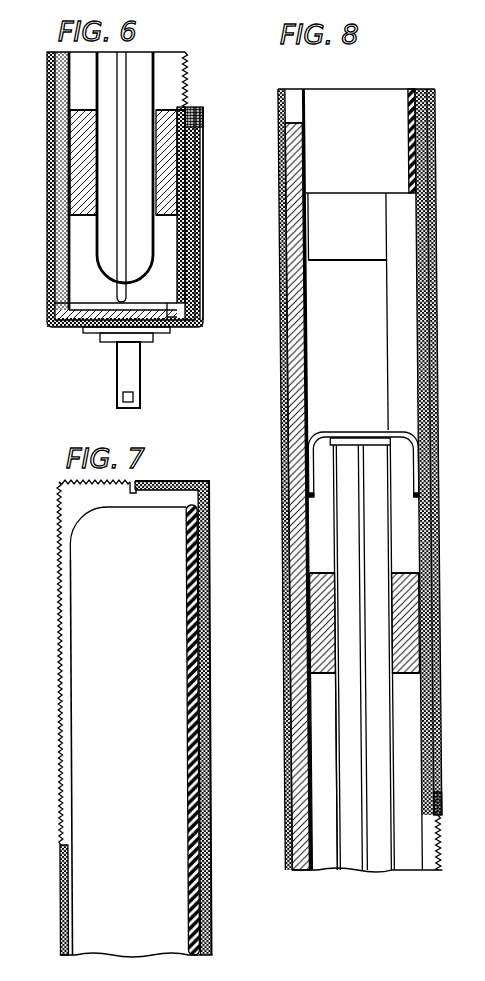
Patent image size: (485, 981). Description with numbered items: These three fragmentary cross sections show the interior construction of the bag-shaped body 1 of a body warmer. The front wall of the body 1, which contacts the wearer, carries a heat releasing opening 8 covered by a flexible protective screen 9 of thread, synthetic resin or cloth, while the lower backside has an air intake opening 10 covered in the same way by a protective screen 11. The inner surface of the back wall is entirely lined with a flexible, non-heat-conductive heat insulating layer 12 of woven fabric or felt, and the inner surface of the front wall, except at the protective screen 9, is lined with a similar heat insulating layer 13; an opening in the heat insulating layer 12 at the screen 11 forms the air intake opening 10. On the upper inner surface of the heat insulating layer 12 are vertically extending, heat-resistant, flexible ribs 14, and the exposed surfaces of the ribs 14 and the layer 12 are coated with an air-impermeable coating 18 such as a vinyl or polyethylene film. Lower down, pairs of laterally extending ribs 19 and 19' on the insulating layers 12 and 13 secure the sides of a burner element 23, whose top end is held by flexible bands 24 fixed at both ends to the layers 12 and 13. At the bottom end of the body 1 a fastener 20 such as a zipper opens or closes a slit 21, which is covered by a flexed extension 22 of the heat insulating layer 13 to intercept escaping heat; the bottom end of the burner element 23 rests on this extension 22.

In FIG. 6, the bag-shaped body 1 is at (47, 101).
In FIG. 7, the bag-shaped body 1 is at (58, 892).
In FIG. 8, the bag-shaped body 1 is at (278, 270).
In FIG. 7, the heat releasing opening 8 is at (62, 693).
In FIG. 7, the protective screen 9 is at (59, 722).
In FIG. 6, the air intake opening 10 is at (190, 62).
In FIG. 8, the air intake opening 10 is at (428, 840).
In FIG. 6, the protective screen 11 is at (196, 100).
In FIG. 8, the protective screen 11 is at (434, 858).
In FIG. 6, the heat insulating material layer 12 is at (203, 326).
In FIG. 7, the heat insulating material layer 12 is at (203, 617).
In FIG. 8, the heat insulating material layer 12 is at (422, 310).
In FIG. 6, the heat insulating material layer 13 is at (62, 193).
In FIG. 8, the heat insulating material layer 13 is at (290, 236).
In FIG. 7, the ribs 14 is at (68, 548).
In FIG. 8, the ribs 14 is at (335, 100).
In FIG. 7, the air-impermeable coating 18 is at (72, 663).
In FIG. 8, the air-impermeable coating 18 is at (372, 100).
In FIG. 6, the lateral rib 19 is at (57, 162).
In FIG. 8, the lateral rib 19 is at (295, 622).
In FIG. 6, the lateral rib 19' is at (201, 205).
In FIG. 8, the lateral rib 19' is at (411, 605).
In FIG. 6, the fastener 20 is at (128, 342).
In FIG. 6, the slit 21 is at (120, 329).
In FIG. 6, the flexed extension 22 is at (167, 315).
In FIG. 8, the burner element 23 is at (330, 707).
In FIG. 8, the bands 24 is at (348, 450).